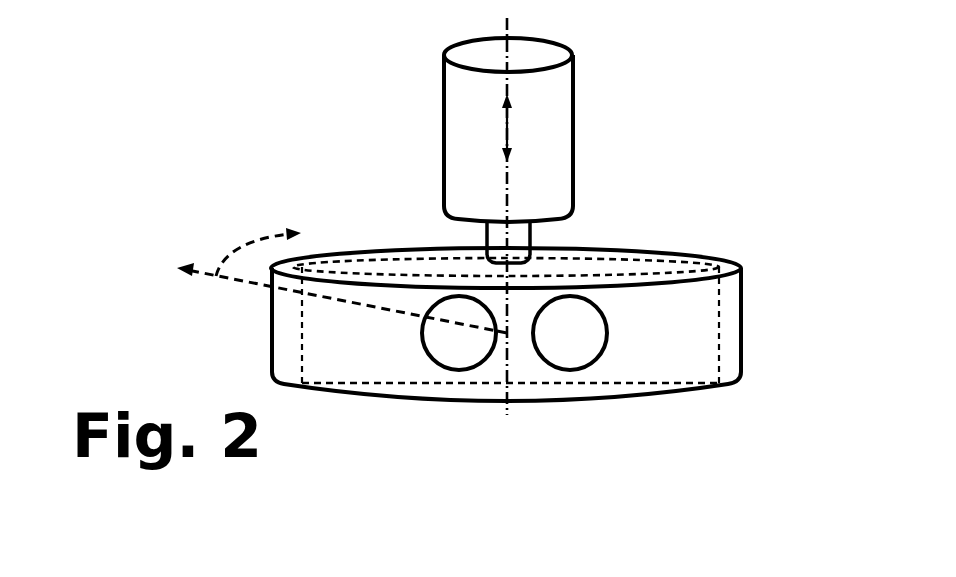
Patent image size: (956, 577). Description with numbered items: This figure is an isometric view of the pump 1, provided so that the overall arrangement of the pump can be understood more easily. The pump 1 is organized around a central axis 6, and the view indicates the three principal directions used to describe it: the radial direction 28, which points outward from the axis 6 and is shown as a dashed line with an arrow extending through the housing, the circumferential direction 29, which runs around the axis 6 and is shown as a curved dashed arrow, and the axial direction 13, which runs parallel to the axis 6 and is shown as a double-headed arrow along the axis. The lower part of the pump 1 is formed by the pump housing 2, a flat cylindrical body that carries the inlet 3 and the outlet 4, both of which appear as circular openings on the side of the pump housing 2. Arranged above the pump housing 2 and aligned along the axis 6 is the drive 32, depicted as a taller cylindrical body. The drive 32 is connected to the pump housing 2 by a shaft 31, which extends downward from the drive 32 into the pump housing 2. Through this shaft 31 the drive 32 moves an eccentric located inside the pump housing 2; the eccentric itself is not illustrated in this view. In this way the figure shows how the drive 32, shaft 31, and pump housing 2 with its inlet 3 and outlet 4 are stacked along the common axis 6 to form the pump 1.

The pump 1 is at (336, 136).
The pump housing 2 is at (268, 333).
The inlet 3 is at (593, 362).
The outlet 4 is at (432, 362).
The axis 6 is at (512, 31).
The axial direction 13 is at (508, 117).
The radial direction 28 is at (202, 270).
The circumferential direction 29 is at (258, 239).
The shaft 31 is at (532, 236).
The drive 32 is at (573, 168).